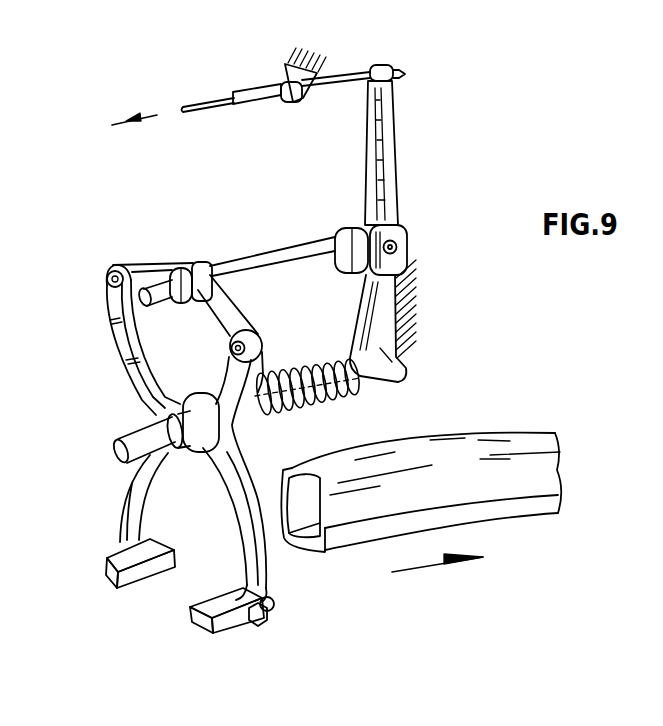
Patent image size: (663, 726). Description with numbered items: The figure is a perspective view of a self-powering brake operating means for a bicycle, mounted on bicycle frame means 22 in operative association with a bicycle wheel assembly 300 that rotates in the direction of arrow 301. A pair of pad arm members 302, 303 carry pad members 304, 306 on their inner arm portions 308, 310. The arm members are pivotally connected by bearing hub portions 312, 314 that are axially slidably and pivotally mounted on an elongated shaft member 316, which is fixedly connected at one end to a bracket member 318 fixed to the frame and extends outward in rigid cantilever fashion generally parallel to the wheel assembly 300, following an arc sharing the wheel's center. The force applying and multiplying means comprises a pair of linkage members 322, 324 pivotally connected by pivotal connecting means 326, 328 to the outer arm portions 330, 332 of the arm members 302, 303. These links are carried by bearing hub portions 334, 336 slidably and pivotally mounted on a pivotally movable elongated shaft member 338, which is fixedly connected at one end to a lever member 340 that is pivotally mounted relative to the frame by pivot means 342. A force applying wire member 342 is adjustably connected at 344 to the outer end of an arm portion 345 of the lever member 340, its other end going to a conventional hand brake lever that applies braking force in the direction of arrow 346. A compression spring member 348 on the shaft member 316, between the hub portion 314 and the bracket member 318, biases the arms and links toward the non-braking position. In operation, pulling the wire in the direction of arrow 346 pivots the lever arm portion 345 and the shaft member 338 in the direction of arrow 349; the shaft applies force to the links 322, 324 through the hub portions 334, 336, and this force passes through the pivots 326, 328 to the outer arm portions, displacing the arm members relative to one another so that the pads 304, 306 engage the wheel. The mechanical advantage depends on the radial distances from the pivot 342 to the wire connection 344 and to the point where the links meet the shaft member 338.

The bicycle frame means 22 is at (424, 303).
The bicycle wheel assembly 300 is at (560, 511).
The arrow 301 is at (410, 575).
The pad arm member 302 is at (147, 419).
The pad arm member 303 is at (229, 437).
The pad member 304 is at (103, 586).
The pad member 306 is at (208, 634).
The inner arm portion 308 is at (118, 516).
The inner arm portion 310 is at (268, 570).
The bearing hub portion 312 is at (188, 452).
The bearing hub portion 314 is at (201, 407).
The elongated shaft member 316 is at (113, 443).
The bracket member 318 is at (400, 364).
The linkage member 322 is at (153, 262).
The linkage member 324 is at (234, 306).
The pivotal connecting means 326 is at (106, 281).
The pivotal connecting means 328 is at (229, 346).
The outer arm portion 330 is at (113, 342).
The outer arm portion 332 is at (258, 377).
The bearing hub portion 334 is at (185, 266).
The bearing hub portion 336 is at (206, 264).
The elongated shaft member 338 is at (272, 256).
The lever member 340 is at (344, 228).
The pivot means 342 is at (202, 106).
The point of connection 344 is at (397, 67).
The arm portion 345 is at (385, 127).
The arrow 346 is at (146, 113).
The compression spring member 348 is at (343, 398).
The arrow 349 is at (355, 117).